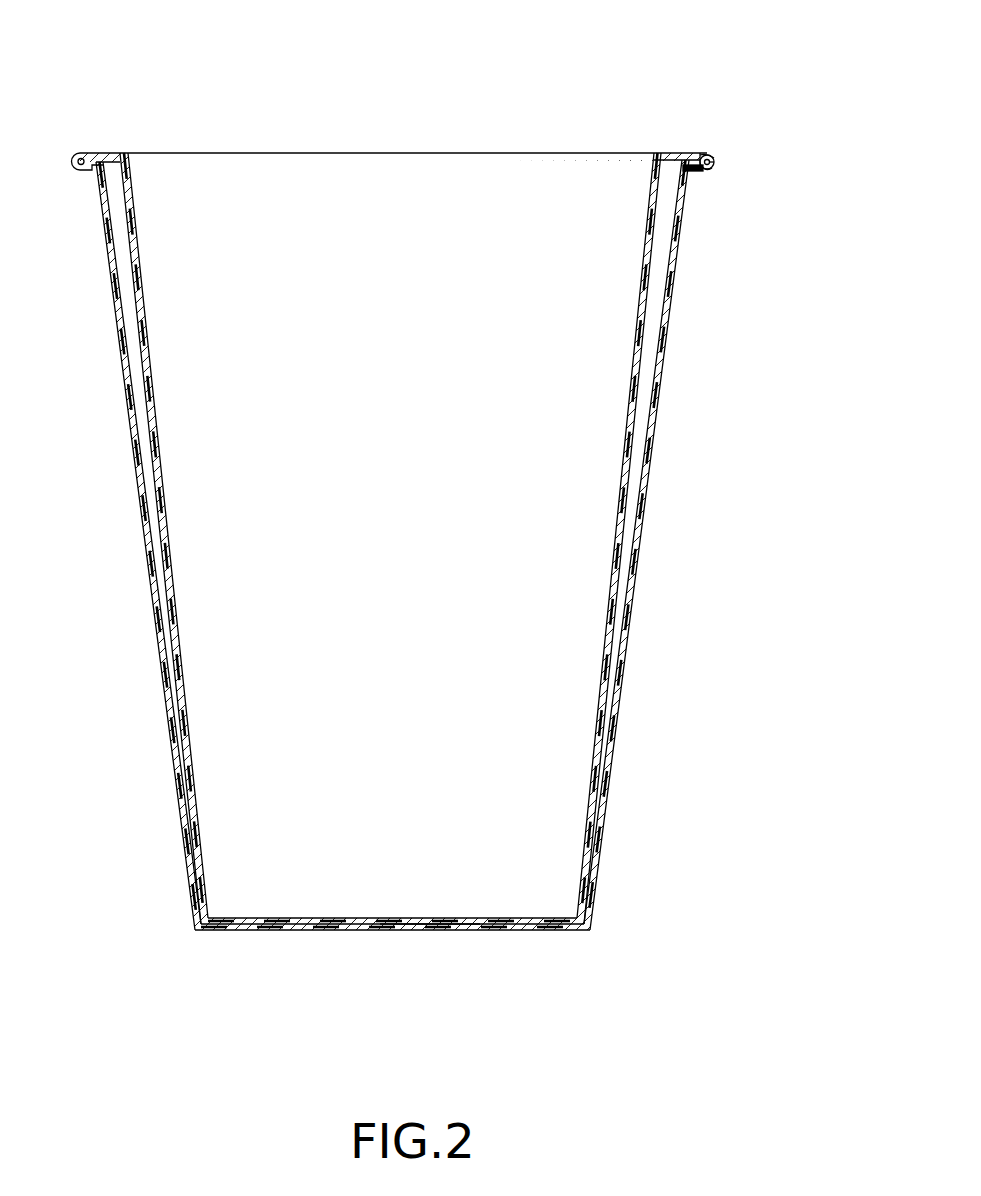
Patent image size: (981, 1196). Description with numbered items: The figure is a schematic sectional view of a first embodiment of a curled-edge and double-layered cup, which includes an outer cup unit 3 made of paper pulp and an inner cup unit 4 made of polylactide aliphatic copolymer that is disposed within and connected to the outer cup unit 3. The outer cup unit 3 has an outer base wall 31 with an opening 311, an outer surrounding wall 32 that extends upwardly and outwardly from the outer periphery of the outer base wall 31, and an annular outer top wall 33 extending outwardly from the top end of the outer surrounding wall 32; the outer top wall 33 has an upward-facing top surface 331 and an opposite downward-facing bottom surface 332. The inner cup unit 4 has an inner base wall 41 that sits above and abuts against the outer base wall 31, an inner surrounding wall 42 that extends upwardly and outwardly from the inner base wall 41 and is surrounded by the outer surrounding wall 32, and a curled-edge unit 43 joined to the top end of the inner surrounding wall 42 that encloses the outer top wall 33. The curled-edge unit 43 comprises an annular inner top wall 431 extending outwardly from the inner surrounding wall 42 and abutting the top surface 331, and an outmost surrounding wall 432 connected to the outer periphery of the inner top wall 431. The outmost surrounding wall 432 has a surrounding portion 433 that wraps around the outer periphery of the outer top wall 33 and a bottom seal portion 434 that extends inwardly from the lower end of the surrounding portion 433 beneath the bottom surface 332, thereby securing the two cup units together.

The outer cup unit 3 is at (490, 549).
The outer base wall 31 is at (552, 930).
The opening 311 is at (433, 927).
The outer surrounding wall 32 is at (648, 476).
The annular outer top wall 33 is at (782, 135).
The top surface 331 is at (702, 152).
The bottom surface 332 is at (700, 170).
The inner cup unit 4 is at (490, 530).
The inner base wall 41 is at (325, 925).
The inner surrounding wall 42 is at (648, 217).
The curled-edge unit 43 is at (675, 153).
The annular inner top wall 431 is at (694, 153).
The outmost surrounding wall 432 is at (714, 163).
The surrounding portion 433 is at (710, 153).
The bottom seal portion 434 is at (697, 172).